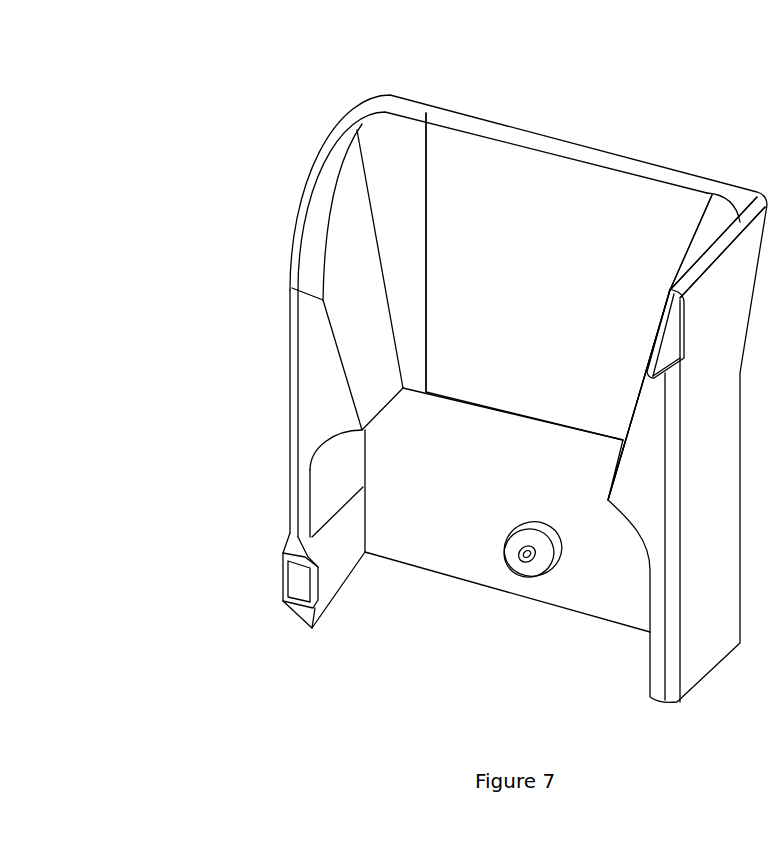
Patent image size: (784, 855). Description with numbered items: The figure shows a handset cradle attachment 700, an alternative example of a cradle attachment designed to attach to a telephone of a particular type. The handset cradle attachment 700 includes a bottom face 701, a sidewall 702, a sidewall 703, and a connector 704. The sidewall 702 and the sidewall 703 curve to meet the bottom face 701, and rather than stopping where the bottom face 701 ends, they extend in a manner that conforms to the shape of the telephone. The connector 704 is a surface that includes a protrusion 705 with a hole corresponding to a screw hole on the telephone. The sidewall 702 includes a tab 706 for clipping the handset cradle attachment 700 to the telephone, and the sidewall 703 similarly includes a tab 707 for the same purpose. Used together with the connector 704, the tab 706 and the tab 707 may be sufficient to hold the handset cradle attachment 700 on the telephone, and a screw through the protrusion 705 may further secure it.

The handset cradle attachment 700 is at (150, 60).
The bottom face 701 is at (549, 302).
The sidewall 702 is at (375, 292).
The sidewall 703 is at (640, 307).
The connector 704 is at (467, 459).
The protrusion 705 is at (516, 532).
The tab 706 is at (283, 588).
The tab 707 is at (692, 331).